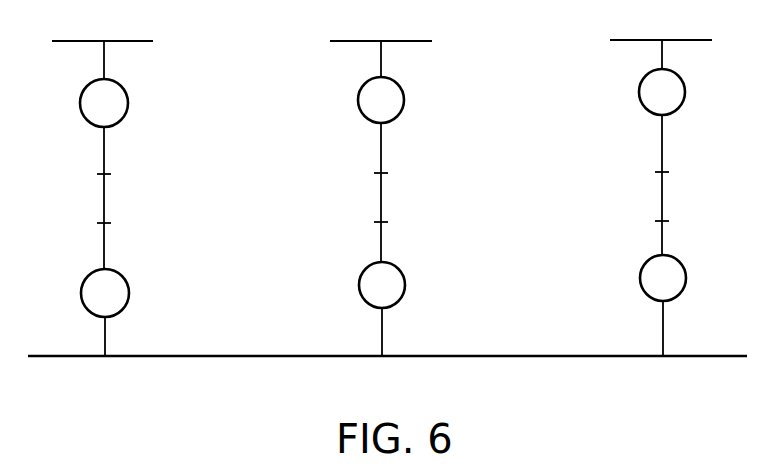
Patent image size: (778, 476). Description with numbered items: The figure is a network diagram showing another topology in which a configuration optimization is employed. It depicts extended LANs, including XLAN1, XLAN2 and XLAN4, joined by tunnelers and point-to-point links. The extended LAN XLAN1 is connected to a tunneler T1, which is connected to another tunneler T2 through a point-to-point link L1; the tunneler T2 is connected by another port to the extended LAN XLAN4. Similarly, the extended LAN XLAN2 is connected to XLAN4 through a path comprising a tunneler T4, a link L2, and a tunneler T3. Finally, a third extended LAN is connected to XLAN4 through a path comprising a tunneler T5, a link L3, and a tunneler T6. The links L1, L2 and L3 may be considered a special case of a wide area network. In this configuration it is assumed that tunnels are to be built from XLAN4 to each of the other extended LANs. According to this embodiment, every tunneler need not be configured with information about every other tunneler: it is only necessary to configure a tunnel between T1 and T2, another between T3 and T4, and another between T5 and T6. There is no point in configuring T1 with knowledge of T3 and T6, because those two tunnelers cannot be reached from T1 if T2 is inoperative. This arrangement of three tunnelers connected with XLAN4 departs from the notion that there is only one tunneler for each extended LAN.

The extended LAN XLAN1 is at (382, 27).
The extended LAN XLAN2 is at (381, 27).
The extended LAN XLAN4 is at (387, 371).
The tunneler T1 is at (104, 84).
The tunneler T2 is at (105, 312).
The tunneler T3 is at (382, 309).
The tunneler T4 is at (381, 82).
The tunneler T5 is at (662, 77).
The tunneler T6 is at (663, 305).
The point-to-point link L1 is at (116, 198).
The point-to-point link L2 is at (393, 192).
The point-to-point link L3 is at (674, 185).